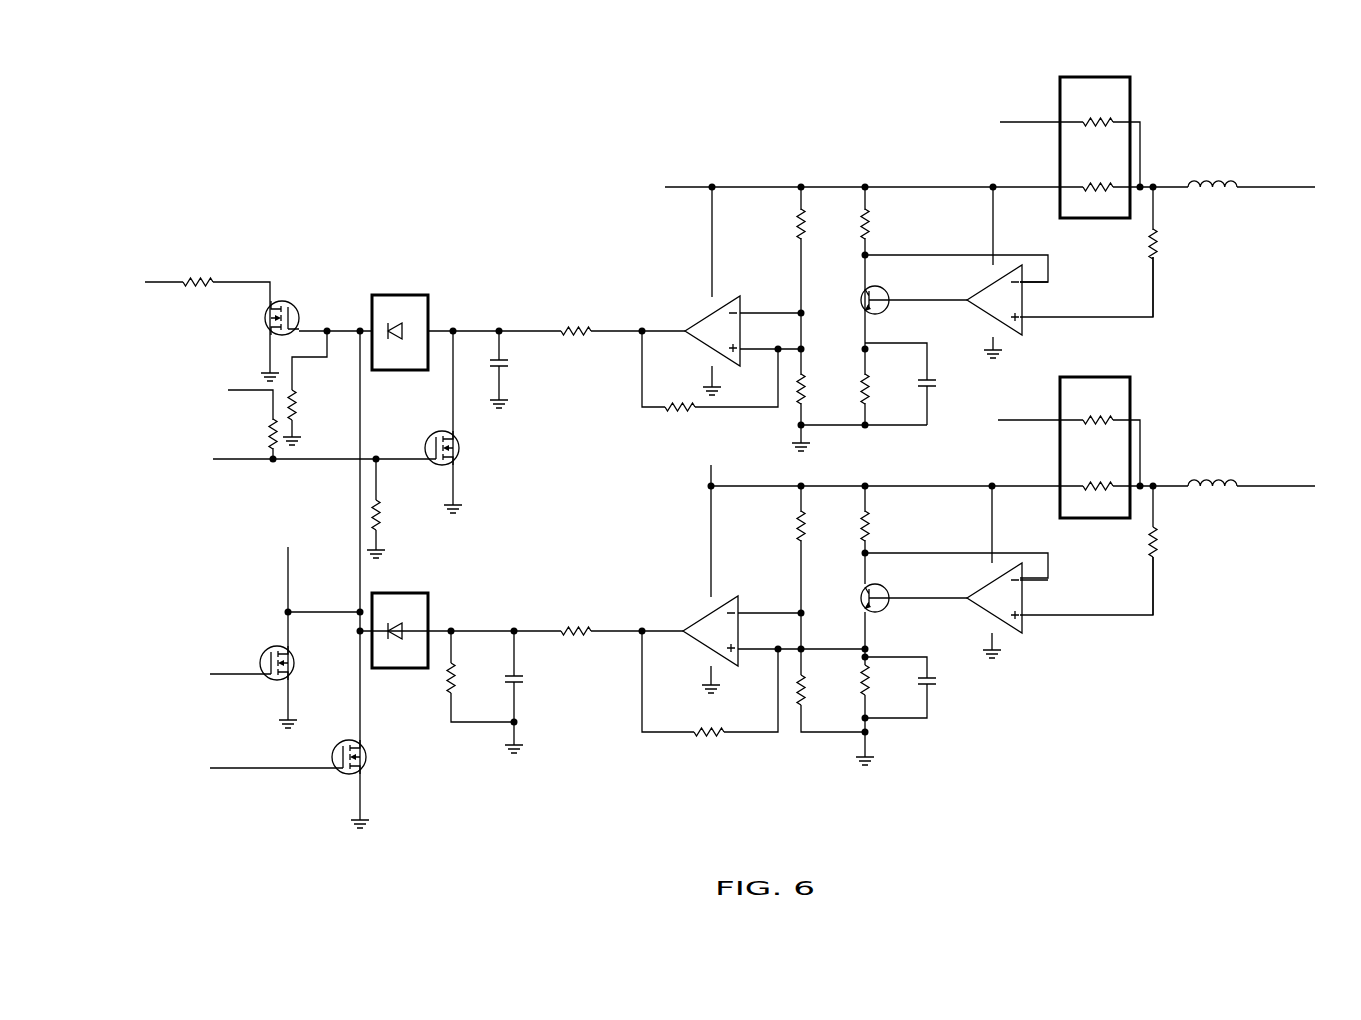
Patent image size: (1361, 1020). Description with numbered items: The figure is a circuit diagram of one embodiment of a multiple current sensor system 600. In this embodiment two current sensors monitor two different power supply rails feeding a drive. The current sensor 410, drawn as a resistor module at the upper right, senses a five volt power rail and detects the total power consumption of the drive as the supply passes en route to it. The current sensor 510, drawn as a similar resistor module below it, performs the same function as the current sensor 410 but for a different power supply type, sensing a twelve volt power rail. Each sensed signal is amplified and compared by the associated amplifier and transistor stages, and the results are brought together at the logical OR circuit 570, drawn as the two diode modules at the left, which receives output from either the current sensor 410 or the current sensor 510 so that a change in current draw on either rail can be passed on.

The power supply circuit 600 is at (376, 117).
The logical OR circuit 570 is at (429, 300).
The current sensor 410 is at (1130, 92).
The current sensor 510 is at (1130, 391).